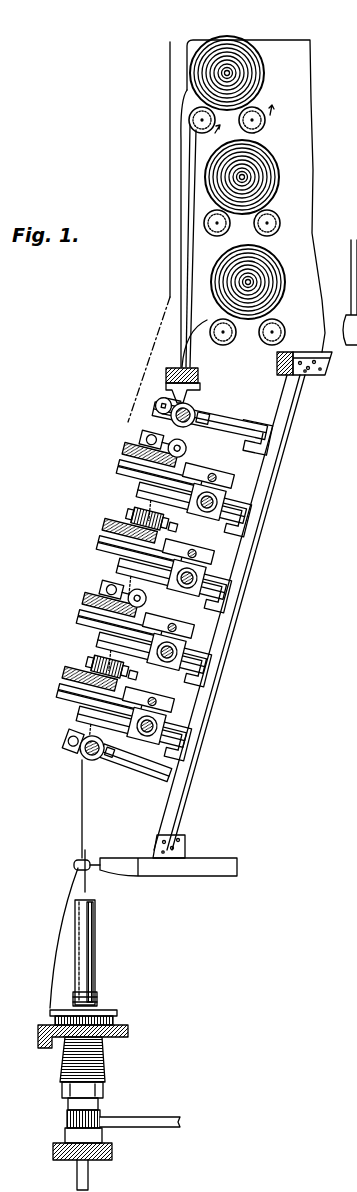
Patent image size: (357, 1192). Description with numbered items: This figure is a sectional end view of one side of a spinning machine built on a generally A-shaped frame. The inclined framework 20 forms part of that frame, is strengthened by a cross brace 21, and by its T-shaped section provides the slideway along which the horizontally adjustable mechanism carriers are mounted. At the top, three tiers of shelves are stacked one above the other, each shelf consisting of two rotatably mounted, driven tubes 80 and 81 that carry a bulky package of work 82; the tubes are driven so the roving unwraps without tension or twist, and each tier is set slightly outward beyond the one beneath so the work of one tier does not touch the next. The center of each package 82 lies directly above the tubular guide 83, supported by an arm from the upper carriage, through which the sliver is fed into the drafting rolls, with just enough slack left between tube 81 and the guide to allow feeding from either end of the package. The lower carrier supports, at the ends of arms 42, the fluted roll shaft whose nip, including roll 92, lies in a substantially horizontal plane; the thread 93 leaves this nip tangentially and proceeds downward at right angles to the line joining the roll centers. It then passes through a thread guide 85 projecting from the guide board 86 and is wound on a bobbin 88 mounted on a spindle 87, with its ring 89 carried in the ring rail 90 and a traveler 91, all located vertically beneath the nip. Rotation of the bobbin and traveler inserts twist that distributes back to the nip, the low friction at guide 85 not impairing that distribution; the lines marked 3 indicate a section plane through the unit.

The section line 3- 3 is at (174, 61).
The framework 20 is at (240, 604).
The cross brace 21 is at (318, 377).
The arm 42 is at (132, 765).
The tube 80 is at (275, 217).
The tube 81 is at (210, 215).
The package of work 82 is at (255, 173).
The tubular guide 83 is at (170, 392).
The thread guide 85 is at (76, 862).
The guide board 86 is at (120, 862).
The spindle 87 is at (90, 1173).
The bobbin 88 is at (96, 964).
The ring 89 is at (112, 1010).
The ring rail 90 is at (128, 1031).
The traveler 91 is at (50, 1010).
The roll 92 is at (78, 740).
The thread 93 is at (80, 797).